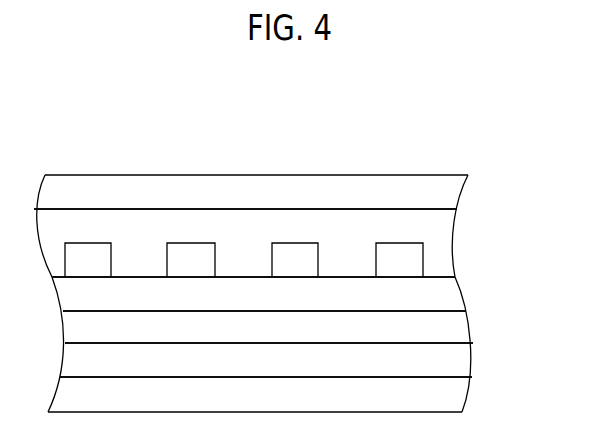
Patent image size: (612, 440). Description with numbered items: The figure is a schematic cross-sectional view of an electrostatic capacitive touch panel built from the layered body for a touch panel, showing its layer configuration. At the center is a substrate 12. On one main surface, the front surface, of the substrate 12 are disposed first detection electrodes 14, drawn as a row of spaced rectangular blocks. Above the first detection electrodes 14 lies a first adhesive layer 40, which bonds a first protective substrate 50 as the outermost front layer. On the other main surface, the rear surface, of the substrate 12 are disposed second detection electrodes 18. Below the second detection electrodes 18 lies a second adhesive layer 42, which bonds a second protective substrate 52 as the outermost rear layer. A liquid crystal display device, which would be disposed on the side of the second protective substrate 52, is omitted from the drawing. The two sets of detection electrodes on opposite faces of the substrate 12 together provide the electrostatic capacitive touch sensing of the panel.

The substrate 12 is at (440, 294).
The first detection electrodes 14 is at (88, 257).
The second detection electrodes 18 is at (440, 329).
The first adhesive layer 40 is at (440, 243).
The second adhesive layer 42 is at (440, 364).
The first protective substrate 50 is at (440, 192).
The second protective substrate 52 is at (440, 398).